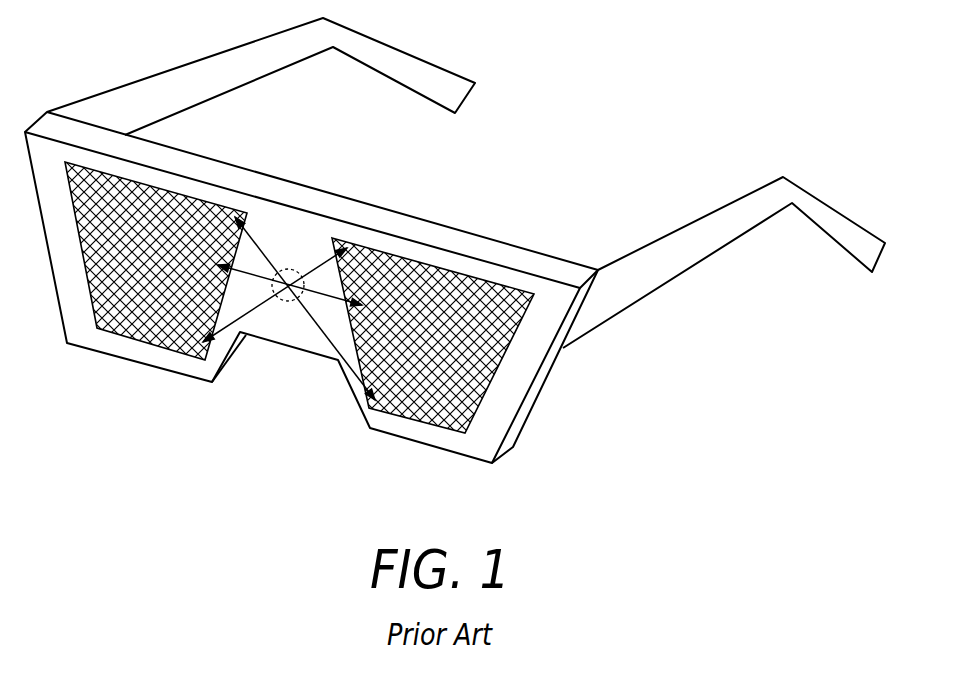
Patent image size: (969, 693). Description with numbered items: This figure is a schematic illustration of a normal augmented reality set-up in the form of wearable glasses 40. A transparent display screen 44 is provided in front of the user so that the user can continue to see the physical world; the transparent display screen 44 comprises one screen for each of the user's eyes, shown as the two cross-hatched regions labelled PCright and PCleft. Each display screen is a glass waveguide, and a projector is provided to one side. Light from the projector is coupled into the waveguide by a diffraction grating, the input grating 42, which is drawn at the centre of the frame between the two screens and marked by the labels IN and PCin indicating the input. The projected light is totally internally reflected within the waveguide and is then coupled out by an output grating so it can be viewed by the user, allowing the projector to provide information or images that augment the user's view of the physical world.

The wearable glasses 40 is at (65, 82).
The input grating 42 is at (300, 270).
The transparent display screen 44 is at (280, 301).
The right picture component PCright is at (138, 350).
The left picture component PCleft is at (415, 430).
The input picture component PCin is at (287, 315).
The input IN is at (283, 300).